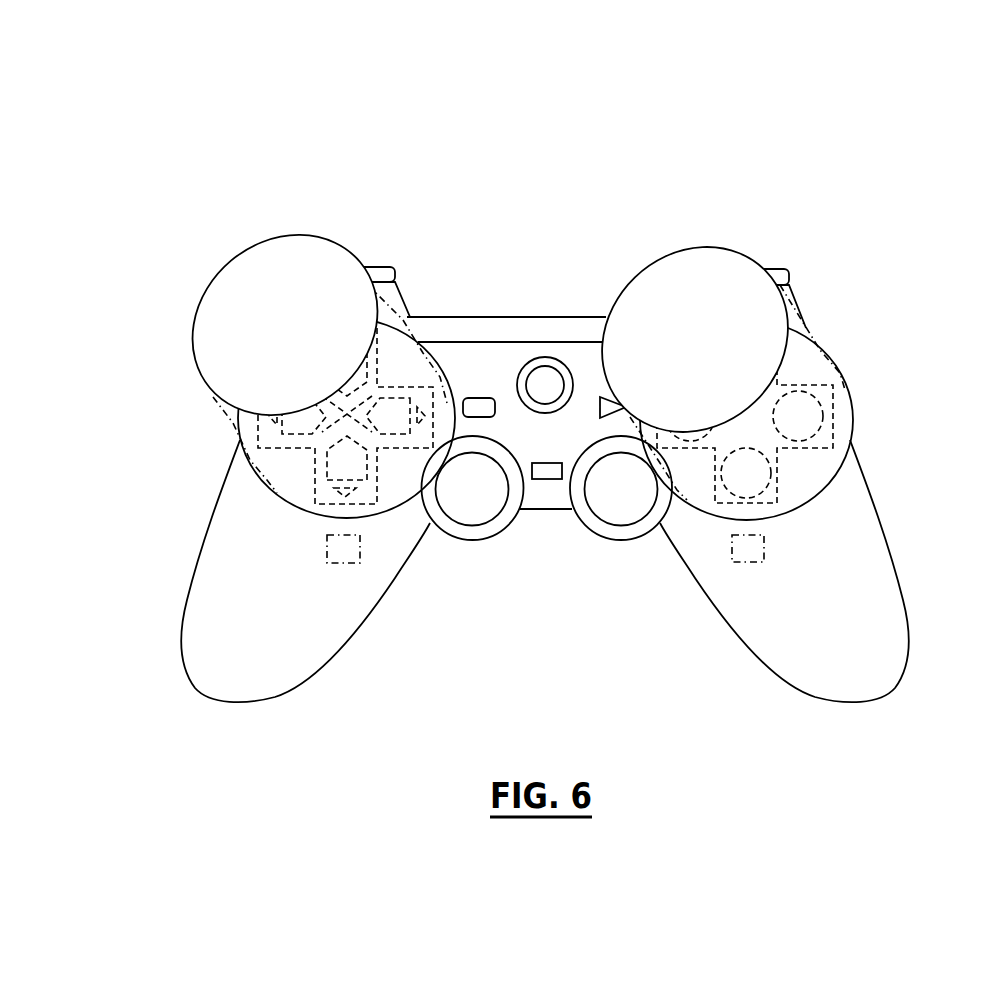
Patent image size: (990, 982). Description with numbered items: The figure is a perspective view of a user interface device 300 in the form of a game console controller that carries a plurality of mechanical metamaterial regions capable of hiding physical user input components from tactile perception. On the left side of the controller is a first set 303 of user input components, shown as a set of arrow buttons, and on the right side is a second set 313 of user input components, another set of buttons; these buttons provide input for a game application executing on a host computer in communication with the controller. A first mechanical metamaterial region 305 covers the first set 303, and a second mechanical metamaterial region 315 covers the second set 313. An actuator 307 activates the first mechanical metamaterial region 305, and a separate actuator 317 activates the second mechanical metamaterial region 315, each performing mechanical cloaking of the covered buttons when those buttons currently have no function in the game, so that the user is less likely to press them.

The user interface device 300 is at (262, 126).
The first set of user input components 303 is at (340, 461).
The first mechanical metamaterial region 305 is at (349, 254).
The actuator 307 is at (361, 550).
The second set of user input components 313 is at (823, 408).
The second mechanical metamaterial region 315 is at (739, 257).
The actuator 317 is at (730, 553).